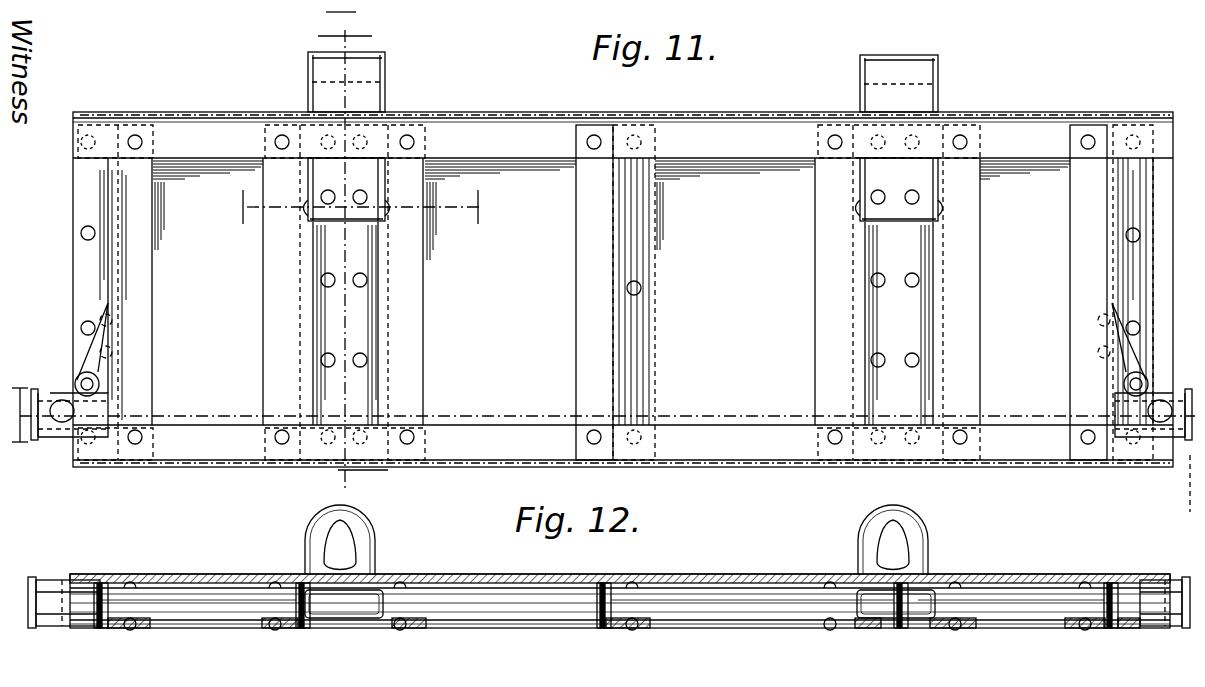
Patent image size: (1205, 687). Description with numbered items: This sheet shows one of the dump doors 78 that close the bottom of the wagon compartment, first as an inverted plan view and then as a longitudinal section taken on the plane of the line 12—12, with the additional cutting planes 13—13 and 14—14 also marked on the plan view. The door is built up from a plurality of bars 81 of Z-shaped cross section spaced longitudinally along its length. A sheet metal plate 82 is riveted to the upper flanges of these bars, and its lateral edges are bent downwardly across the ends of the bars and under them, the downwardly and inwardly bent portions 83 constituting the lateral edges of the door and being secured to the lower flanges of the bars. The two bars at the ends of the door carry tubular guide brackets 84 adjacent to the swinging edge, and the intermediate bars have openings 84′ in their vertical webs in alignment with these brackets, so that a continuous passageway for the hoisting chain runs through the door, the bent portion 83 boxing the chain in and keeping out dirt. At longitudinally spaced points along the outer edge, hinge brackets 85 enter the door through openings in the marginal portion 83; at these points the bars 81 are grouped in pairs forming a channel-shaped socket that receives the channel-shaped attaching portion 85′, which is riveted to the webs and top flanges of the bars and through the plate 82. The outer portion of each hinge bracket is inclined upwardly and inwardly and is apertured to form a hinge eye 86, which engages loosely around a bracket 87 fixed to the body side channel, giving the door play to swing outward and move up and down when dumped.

In FIG. 11, the dump door 78 is at (558, 113).
In FIG. 12, the dump door 78 is at (660, 580).
In FIG. 11, the Z-shaped bar 81 is at (135, 282).
In FIG. 12, the Z-shaped bar 81 is at (108, 586).
In FIG. 11, the sheet metal plate 82 is at (471, 165).
In FIG. 12, the sheet metal plate 82 is at (560, 571).
In FIG. 11, the downwardly bent portion of the plate 83 is at (445, 120).
In FIG. 11, the tubular guide bracket 84 is at (58, 372).
In FIG. 12, the tubular guide bracket 84 is at (45, 588).
In FIG. 11, the opening 84′ is at (113, 395).
In FIG. 12, the opening 84′ is at (113, 600).
In FIG. 11, the hinge bracket 85 is at (387, 76).
In FIG. 12, the hinge bracket 85 is at (380, 560).
In FIG. 11, the attaching portion of the hinge bracket 85′ is at (318, 172).
In FIG. 12, the attaching portion of the hinge bracket 85′ is at (363, 600).
In FIG. 12, the hinge eye 86 is at (356, 540).
In FIG. 11, the bracket 87 is at (710, 458).
In FIG. 12, the bracket 87 is at (571, 630).
In FIG. 11, the section line 12— 12 is at (597, 450).
In FIG. 11, the section line 13— 13 is at (344, 209).
In FIG. 11, the section line 14— 14 is at (353, 260).